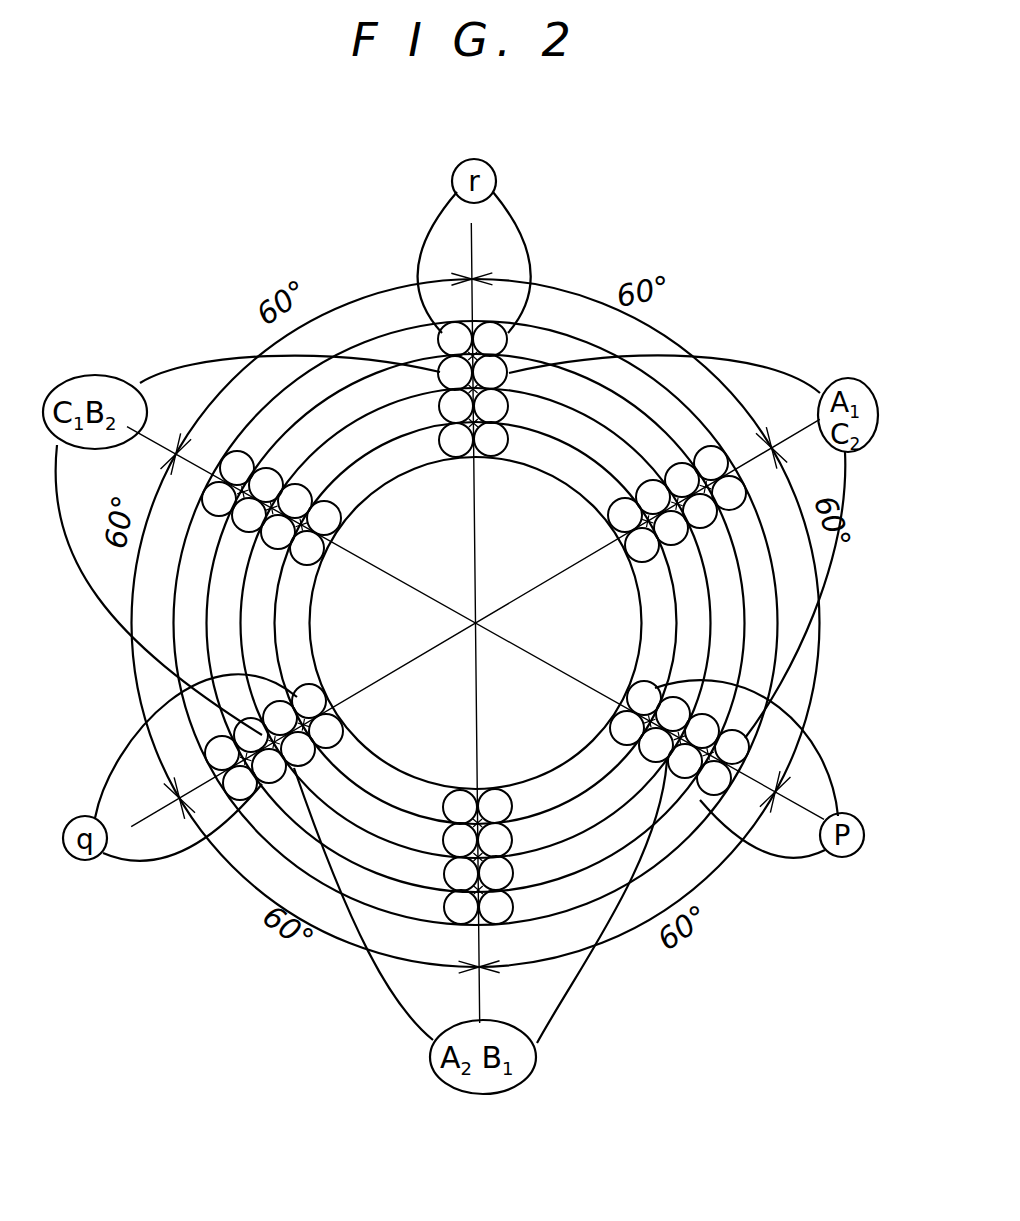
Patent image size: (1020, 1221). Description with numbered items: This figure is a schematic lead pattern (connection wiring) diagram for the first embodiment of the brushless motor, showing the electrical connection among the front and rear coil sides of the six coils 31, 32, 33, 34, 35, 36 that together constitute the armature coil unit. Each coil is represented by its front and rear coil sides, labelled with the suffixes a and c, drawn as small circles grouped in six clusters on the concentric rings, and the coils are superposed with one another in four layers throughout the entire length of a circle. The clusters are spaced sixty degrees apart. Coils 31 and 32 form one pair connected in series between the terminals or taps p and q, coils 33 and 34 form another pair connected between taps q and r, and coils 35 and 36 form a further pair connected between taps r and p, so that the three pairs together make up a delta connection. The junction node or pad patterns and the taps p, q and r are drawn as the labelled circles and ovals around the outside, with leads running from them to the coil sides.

The coil 31 is at (708, 452).
The coil 32 is at (303, 473).
The coil 33 is at (673, 548).
The coil 34 is at (700, 523).
The coil 35 is at (510, 340).
The coil 36 is at (652, 483).